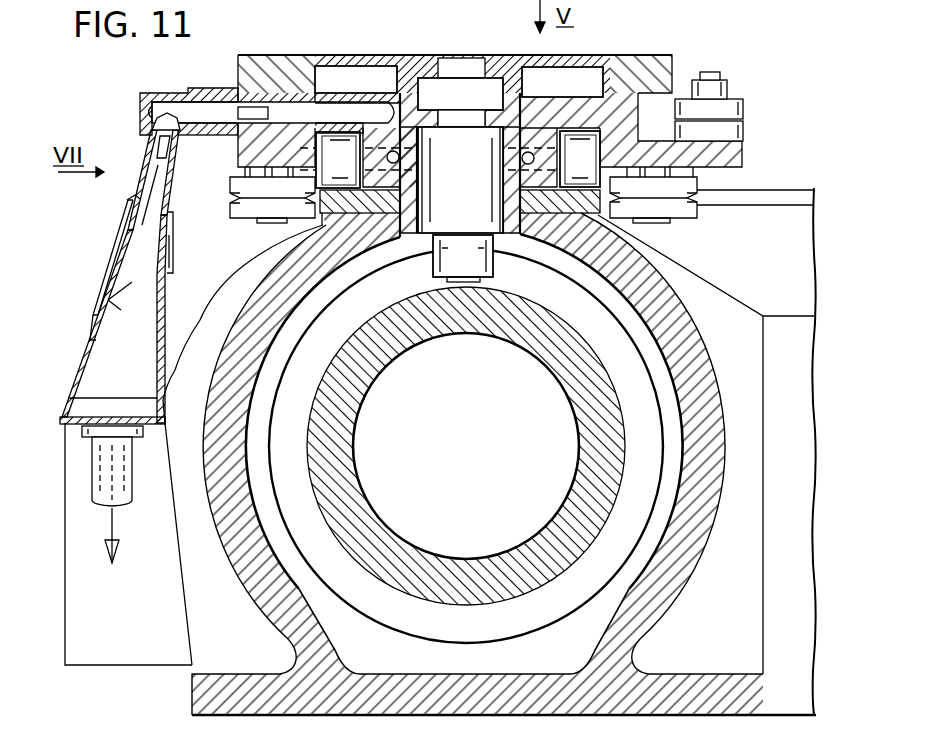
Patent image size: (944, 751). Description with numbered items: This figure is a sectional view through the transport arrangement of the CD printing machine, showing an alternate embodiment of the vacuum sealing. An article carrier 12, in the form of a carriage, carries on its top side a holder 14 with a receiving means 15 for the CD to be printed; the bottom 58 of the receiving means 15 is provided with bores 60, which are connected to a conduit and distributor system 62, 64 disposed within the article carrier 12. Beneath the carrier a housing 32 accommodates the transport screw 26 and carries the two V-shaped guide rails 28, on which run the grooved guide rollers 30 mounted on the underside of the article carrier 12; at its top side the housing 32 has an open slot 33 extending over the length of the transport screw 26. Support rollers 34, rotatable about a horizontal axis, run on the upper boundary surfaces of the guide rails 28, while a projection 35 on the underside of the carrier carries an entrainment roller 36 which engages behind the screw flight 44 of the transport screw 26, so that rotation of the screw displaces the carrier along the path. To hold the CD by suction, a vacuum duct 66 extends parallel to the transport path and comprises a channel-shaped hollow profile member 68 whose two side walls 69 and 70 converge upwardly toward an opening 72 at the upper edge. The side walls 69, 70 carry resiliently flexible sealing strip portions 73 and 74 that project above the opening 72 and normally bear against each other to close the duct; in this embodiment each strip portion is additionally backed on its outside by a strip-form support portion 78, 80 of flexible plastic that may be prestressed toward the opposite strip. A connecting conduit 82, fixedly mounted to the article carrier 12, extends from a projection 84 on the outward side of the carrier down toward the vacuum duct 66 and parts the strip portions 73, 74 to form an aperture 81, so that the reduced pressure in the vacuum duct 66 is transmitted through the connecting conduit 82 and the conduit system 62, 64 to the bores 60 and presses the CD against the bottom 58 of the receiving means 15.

The article carrier 12 is at (494, 89).
The holder 14 is at (660, 77).
The receiving means 15 is at (317, 55).
The transport screw 26 is at (596, 446).
The guide rails 28 is at (355, 198).
The guide rollers 30 is at (250, 213).
The housing 32 is at (706, 512).
The open slot 33 is at (519, 232).
The support rollers 34 is at (330, 148).
The projection 35 is at (444, 216).
The entrainment roller 36 is at (474, 262).
The screw flight 44 is at (590, 577).
The bottom 58 is at (450, 58).
The bores 60 is at (352, 57).
The conduit and distributor system 62 is at (370, 78).
The conduit and distributor system 64 is at (285, 110).
The vacuum duct 66 is at (117, 319).
The channel-shaped hollow profile member 68 is at (60, 383).
The side wall 69 is at (87, 357).
The side wall 70 is at (163, 337).
The opening 72 is at (124, 292).
The strip portion 73 is at (133, 192).
The strip portion 74 is at (173, 210).
The support portion 78 is at (124, 240).
The support portion 80 is at (174, 237).
The aperture 81 is at (136, 183).
The connecting conduit 82 is at (143, 160).
The projection 84 is at (207, 88).